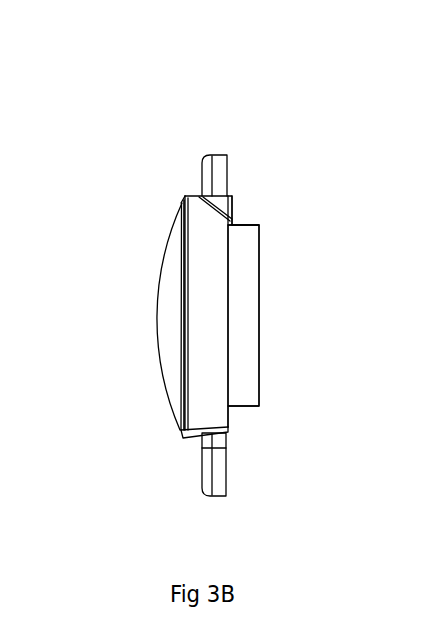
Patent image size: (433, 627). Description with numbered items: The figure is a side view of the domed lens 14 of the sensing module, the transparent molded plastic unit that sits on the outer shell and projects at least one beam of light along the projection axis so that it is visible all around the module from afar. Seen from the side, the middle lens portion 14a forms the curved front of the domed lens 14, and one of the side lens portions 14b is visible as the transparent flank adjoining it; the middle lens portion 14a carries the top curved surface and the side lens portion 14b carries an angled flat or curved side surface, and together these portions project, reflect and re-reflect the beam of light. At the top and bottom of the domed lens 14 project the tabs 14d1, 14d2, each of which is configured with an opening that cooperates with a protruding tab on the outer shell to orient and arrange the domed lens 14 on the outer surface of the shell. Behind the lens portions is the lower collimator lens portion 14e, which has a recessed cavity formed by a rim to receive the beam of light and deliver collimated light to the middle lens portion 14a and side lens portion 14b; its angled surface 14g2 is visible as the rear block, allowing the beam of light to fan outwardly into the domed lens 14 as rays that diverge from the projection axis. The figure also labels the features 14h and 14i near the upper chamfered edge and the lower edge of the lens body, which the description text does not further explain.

The domed lens 14 is at (349, 83).
The middle lens portion 14a is at (170, 315).
The side lens portion 14b is at (205, 395).
The tab 14d1 is at (217, 153).
The tab 14d2 is at (226, 463).
The lower collimator lens portion 14e is at (249, 220).
The angled surface 14g2 is at (243, 313).
The chamfer 14h is at (199, 195).
The lower edge 14i is at (190, 442).